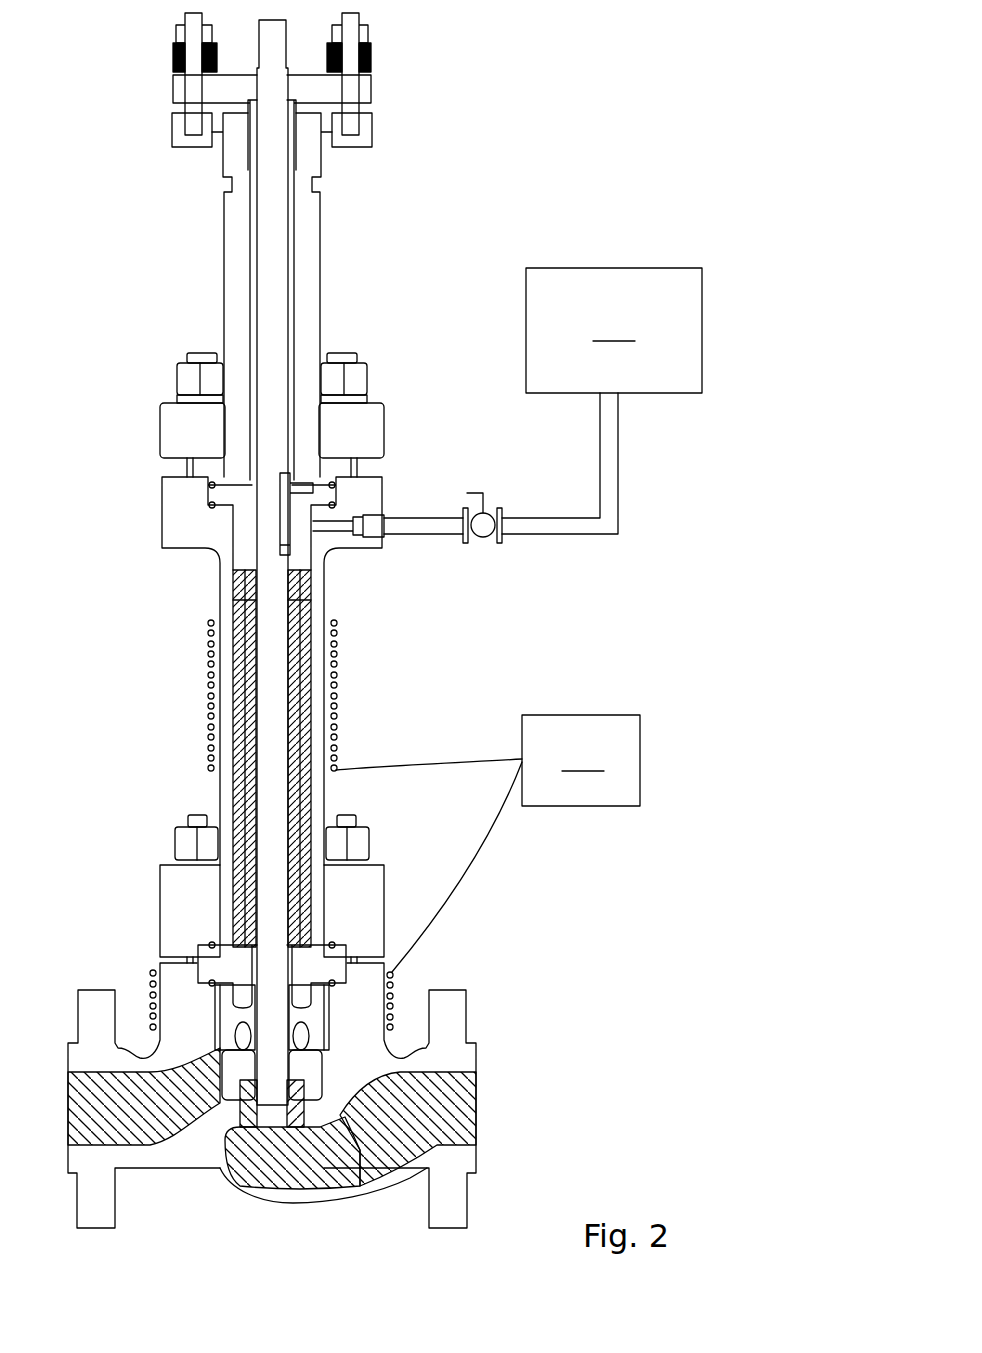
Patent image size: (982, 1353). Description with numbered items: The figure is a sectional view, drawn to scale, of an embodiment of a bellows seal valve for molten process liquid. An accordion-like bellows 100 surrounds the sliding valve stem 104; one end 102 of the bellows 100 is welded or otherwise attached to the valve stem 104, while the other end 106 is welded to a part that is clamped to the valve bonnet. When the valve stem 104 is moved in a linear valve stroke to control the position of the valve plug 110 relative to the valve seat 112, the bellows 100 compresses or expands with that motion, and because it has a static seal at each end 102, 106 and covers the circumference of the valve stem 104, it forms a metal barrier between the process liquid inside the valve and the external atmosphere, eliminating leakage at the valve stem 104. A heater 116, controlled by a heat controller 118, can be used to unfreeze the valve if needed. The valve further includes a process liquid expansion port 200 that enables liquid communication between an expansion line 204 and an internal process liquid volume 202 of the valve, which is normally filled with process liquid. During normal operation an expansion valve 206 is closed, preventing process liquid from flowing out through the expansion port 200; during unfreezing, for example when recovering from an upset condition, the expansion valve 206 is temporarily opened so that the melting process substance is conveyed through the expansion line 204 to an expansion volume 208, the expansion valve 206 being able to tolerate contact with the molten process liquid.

The bellows 100 is at (308, 800).
The end of the bellows 102 is at (232, 930).
The valve stem 104 is at (265, 790).
The other end of the bellows 106 is at (240, 585).
The valve plug 110 is at (287, 1137).
The valve seat 112 is at (352, 1118).
The heater 116 is at (341, 671).
The heat controller 118 is at (488, 843).
The process liquid expansion port 200 is at (373, 517).
The internal process liquid volume 202 is at (312, 596).
The expansion line 204 is at (573, 517).
The expansion valve 206 is at (483, 540).
The expansion volume 208 is at (614, 330).